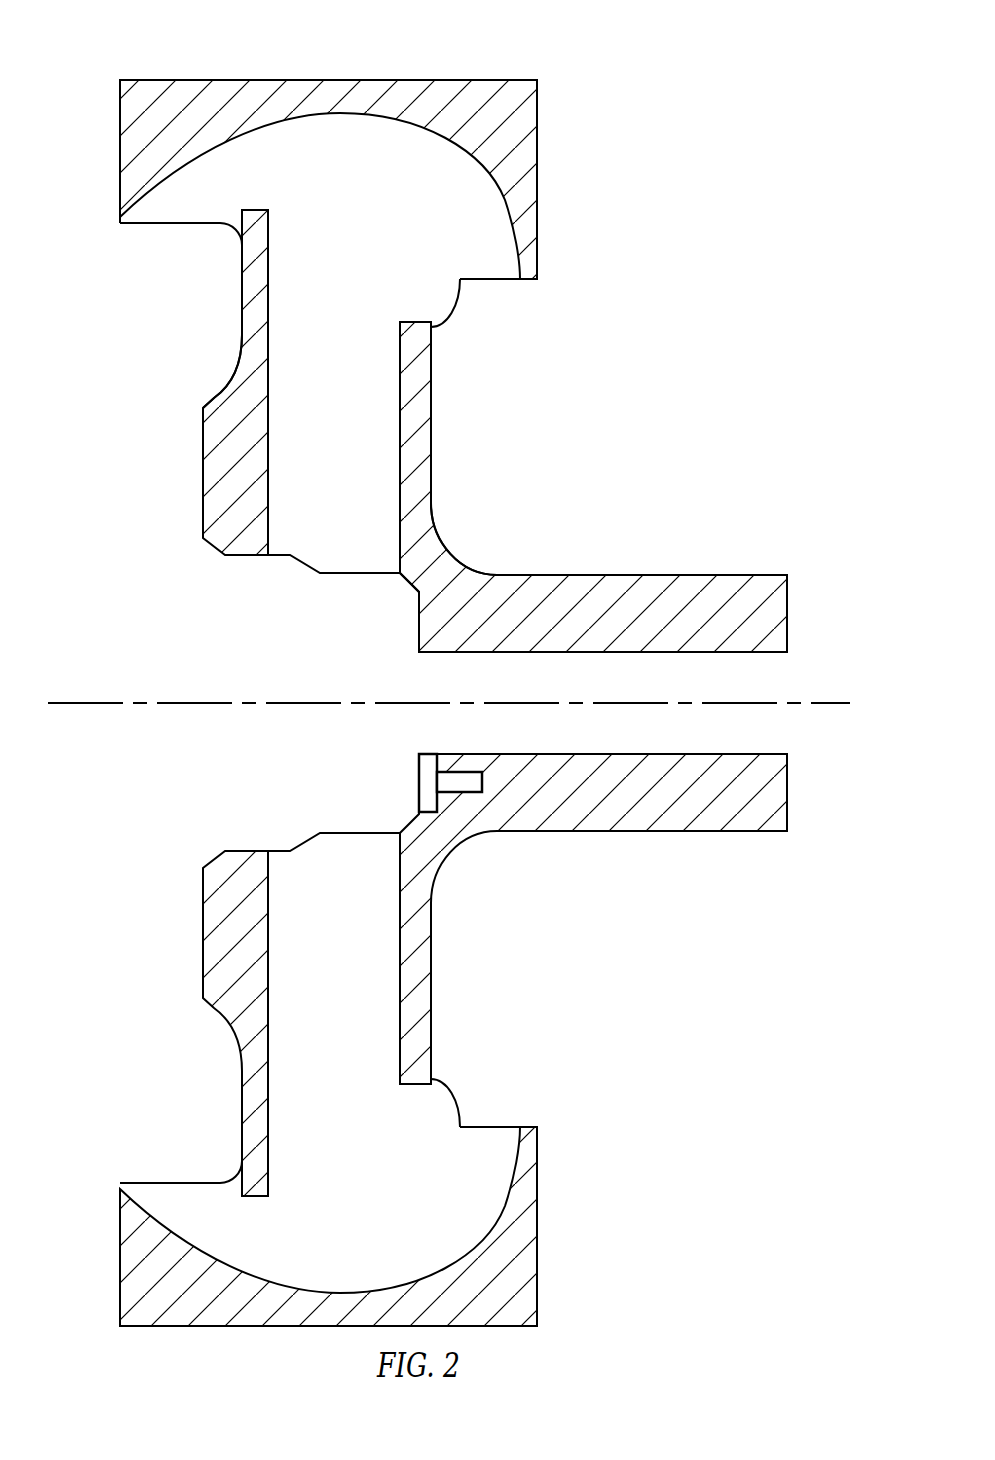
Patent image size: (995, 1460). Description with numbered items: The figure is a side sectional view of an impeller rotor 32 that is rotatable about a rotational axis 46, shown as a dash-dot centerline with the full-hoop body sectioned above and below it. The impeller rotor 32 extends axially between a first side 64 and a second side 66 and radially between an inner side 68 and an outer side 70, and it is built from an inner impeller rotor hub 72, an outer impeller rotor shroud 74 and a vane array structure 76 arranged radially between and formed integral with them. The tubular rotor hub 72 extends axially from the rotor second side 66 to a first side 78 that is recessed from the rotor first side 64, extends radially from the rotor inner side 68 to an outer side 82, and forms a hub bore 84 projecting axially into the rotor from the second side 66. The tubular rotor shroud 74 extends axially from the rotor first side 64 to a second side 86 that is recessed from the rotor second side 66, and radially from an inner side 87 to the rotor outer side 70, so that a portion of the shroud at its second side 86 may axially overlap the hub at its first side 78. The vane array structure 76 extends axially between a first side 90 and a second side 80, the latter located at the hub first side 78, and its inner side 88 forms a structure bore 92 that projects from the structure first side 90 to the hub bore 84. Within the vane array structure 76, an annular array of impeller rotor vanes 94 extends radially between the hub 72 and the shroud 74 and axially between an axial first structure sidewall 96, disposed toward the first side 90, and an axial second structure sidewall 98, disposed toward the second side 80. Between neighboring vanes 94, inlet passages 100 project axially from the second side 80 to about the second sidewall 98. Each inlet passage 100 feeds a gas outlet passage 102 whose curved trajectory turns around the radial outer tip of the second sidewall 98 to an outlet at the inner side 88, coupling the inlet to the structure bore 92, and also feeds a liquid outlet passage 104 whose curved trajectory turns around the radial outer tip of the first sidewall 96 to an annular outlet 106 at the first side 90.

The impeller rotor 32 is at (664, 100).
The rotational axis 46 is at (53, 705).
The first side of the impeller rotor 64 is at (119, 108).
The second side of the impeller rotor 66 is at (788, 608).
The inner side of the impeller rotor 68 is at (770, 653).
The outer side of the impeller rotor 70 is at (493, 80).
The inner impeller rotor hub 72 is at (704, 566).
The outer impeller rotor shroud 74 is at (156, 76).
The vane array structure 76 is at (185, 433).
The first side of the rotor hub 78 is at (418, 625).
The second side of the vane array structure 80 is at (433, 500).
The outer side of the rotor hub 82 is at (620, 573).
The hub bore 84 is at (772, 740).
The second side of the rotor shroud 86 is at (538, 157).
The inner side of the rotor shroud 87 is at (527, 282).
The inner side of the vane array structure 88 is at (330, 575).
The first side of the vane array structure 90 is at (202, 510).
The structure bore 92 is at (255, 655).
The impeller rotor vanes 94 is at (459, 284).
The axial first structure sidewall 96 is at (240, 340).
The axial second structure sidewall 98 is at (433, 410).
The inlet passages 100 is at (461, 259).
The gas outlet passages 102 is at (318, 389).
The liquid outlet passages 104 is at (178, 206).
The outlet 106 is at (163, 294).